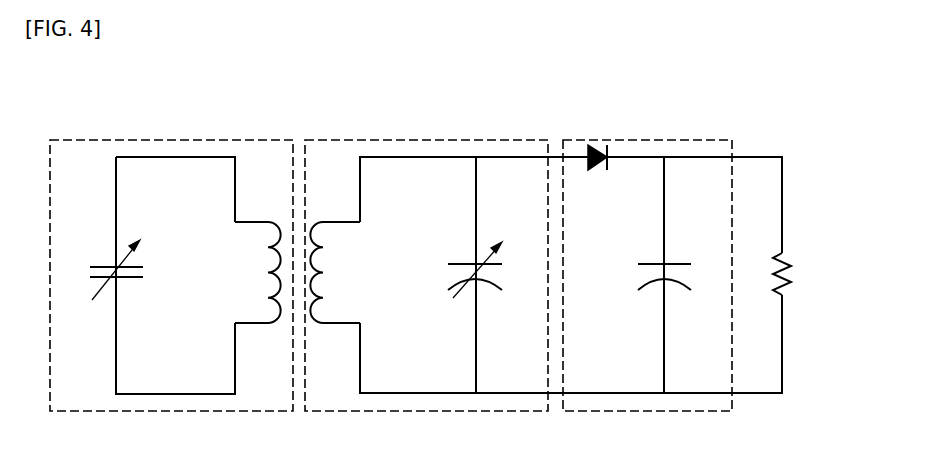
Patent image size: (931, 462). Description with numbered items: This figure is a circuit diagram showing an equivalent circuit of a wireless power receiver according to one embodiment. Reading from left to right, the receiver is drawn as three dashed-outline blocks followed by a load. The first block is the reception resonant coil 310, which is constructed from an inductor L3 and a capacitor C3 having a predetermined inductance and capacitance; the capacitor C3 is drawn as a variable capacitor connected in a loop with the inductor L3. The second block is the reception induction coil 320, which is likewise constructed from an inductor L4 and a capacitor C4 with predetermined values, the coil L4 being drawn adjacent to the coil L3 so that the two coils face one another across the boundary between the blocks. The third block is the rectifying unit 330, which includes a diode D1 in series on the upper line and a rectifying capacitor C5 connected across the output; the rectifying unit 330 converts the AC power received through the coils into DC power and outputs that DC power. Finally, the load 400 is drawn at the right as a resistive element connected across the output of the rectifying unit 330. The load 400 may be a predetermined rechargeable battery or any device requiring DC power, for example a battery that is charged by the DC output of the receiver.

The reception resonant coil 310 is at (200, 140).
The reception induction coil 320 is at (449, 140).
The rectifying unit 330 is at (665, 140).
The load 400 is at (793, 262).
The capacitor C3 is at (101, 270).
The inductor L3 is at (257, 272).
The inductor L4 is at (336, 272).
The capacitor C4 is at (492, 275).
The diode D1 is at (597, 140).
The rectifying capacitor C5 is at (680, 275).